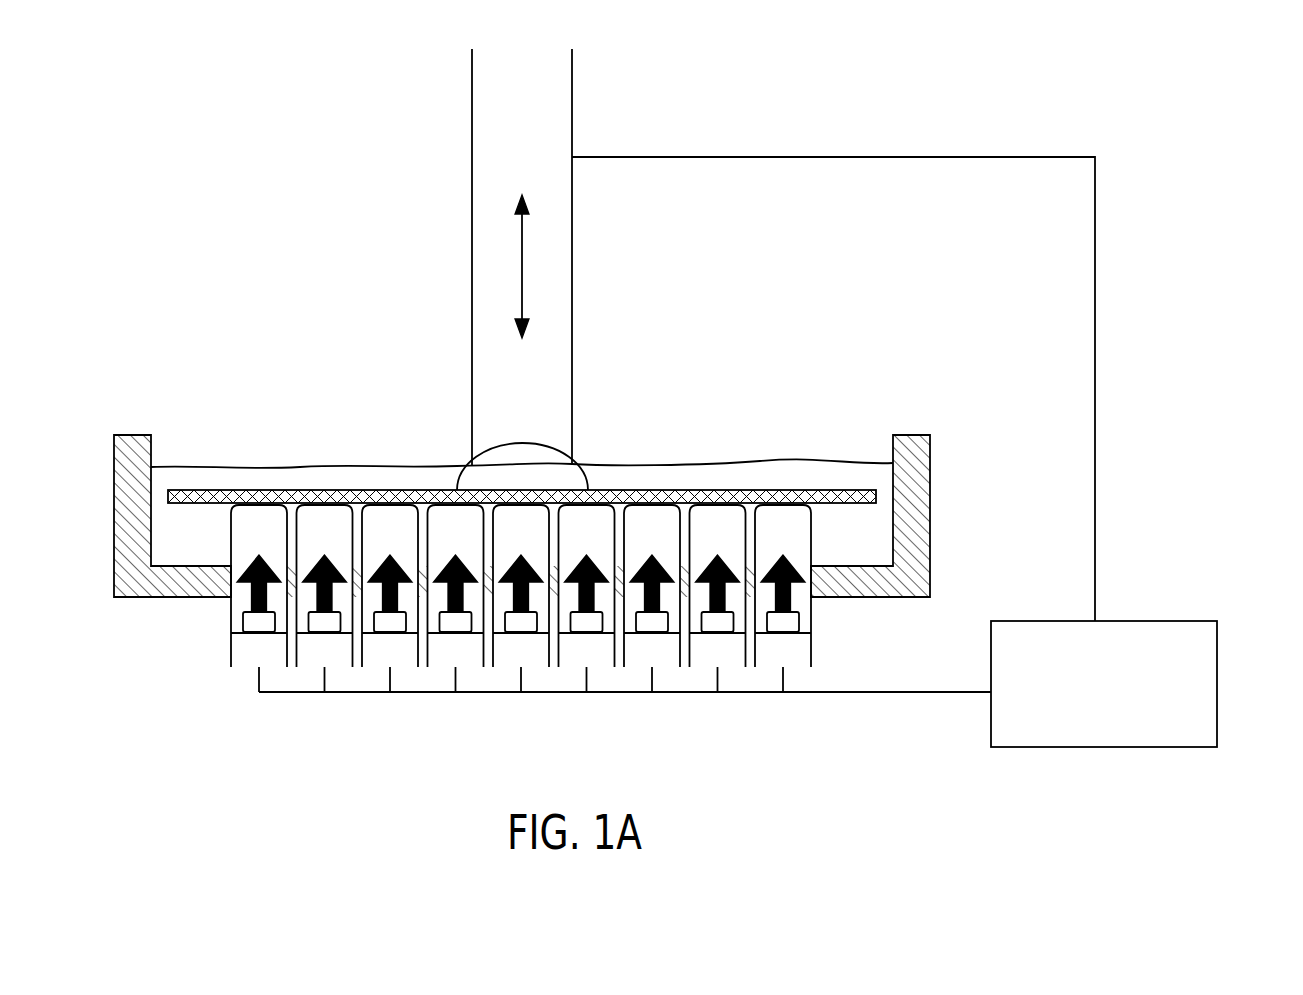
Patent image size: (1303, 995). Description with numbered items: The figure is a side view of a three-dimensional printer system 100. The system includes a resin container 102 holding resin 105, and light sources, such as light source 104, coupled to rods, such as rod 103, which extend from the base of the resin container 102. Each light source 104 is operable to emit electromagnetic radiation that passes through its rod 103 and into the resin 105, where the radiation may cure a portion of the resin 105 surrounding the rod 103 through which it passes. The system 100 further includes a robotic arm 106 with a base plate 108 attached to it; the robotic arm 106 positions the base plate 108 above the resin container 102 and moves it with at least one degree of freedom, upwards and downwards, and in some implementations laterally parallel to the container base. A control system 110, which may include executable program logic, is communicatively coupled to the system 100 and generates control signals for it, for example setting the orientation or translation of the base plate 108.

The 3D printer system 100 is at (194, 203).
The resin container 102 is at (930, 446).
The rod 103 is at (231, 525).
The light source 104 is at (231, 645).
The resin 105 is at (760, 461).
The robotic arm 106 is at (572, 287).
The base plate 108 is at (303, 490).
The control system 110 is at (1217, 672).